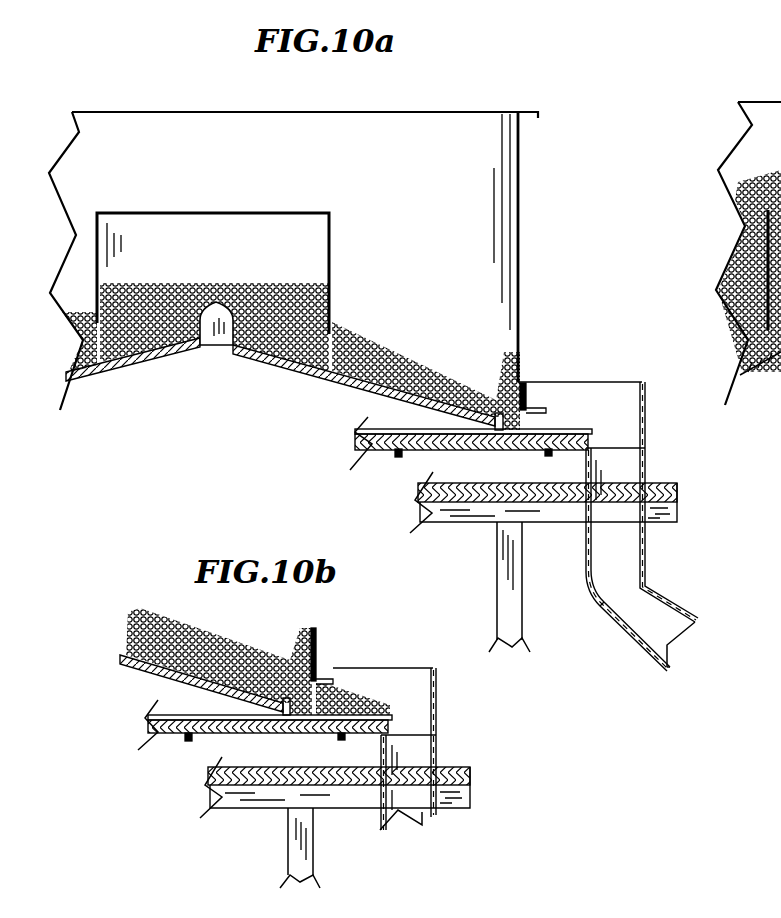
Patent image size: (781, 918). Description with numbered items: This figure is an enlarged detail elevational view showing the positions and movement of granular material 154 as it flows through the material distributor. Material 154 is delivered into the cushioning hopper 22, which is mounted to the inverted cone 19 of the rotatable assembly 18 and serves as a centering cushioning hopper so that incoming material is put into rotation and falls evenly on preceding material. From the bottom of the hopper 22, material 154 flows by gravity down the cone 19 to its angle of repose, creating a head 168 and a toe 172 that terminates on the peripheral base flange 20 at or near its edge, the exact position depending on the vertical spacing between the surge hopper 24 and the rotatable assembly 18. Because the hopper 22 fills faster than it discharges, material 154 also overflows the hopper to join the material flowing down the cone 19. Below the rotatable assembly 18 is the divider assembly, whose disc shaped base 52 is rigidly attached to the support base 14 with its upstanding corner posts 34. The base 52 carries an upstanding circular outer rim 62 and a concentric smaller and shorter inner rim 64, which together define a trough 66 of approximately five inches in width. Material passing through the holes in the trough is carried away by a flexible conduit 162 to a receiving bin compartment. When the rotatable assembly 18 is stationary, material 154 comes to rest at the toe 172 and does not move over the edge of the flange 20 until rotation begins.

In FIG. 10A, the support base 14 is at (494, 590).
In FIG. 10B, the support base 14 is at (283, 835).
In FIG. 10A, the rotatable assembly 18 is at (405, 463).
In FIG. 10B, the rotatable assembly 18 is at (200, 745).
In FIG. 10A, the inverted cone 19 is at (302, 381).
In FIG. 10B, the inverted cone 19 is at (164, 681).
In FIG. 10A, the peripheral base flange 20 is at (614, 440).
In FIG. 10A, the cushioning hopper 22 is at (336, 228).
In FIG. 10A, the surge hopper 24 is at (524, 204).
In FIG. 10A, the corner posts 34 is at (500, 556).
In FIG. 10B, the corner posts 34 is at (313, 838).
In FIG. 10A, the disc shaped base 52 is at (683, 500).
In FIG. 10B, the disc shaped base 52 is at (482, 776).
In FIG. 10A, the outer rim 62 is at (646, 412).
In FIG. 10B, the outer rim 62 is at (437, 678).
In FIG. 10A, the inner rim 64 is at (586, 465).
In FIG. 10B, the inner rim 64 is at (381, 748).
In FIG. 10A, the trough 66 is at (616, 440).
In FIG. 10B, the trough 66 is at (410, 727).
In FIG. 10A, the granular material 154 is at (378, 333).
In FIG. 10B, the granular material 154 is at (178, 618).
In FIG. 10A, the flexible conduit 162 is at (650, 590).
In FIG. 10B, the flexible conduit 162 is at (420, 815).
In FIG. 10A, the head 168 is at (531, 406).
In FIG. 10B, the head 168 is at (319, 682).
In FIG. 10A, the toe 172 is at (577, 428).
In FIG. 10B, the toe 172 is at (385, 702).